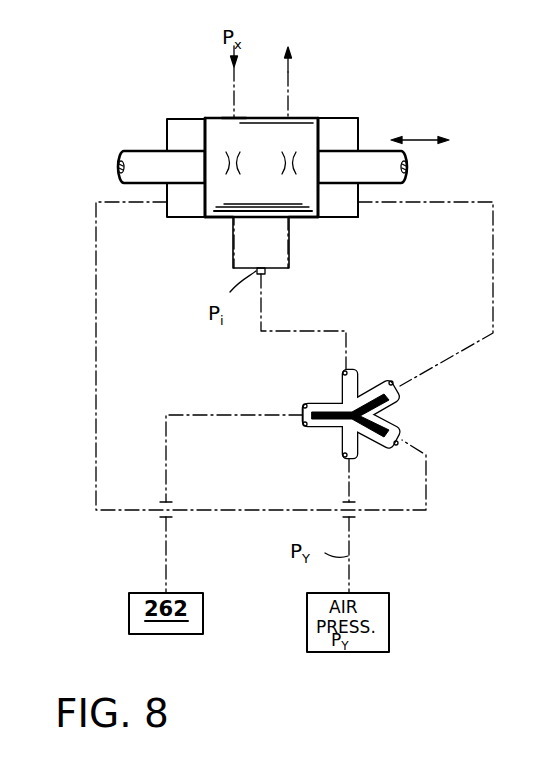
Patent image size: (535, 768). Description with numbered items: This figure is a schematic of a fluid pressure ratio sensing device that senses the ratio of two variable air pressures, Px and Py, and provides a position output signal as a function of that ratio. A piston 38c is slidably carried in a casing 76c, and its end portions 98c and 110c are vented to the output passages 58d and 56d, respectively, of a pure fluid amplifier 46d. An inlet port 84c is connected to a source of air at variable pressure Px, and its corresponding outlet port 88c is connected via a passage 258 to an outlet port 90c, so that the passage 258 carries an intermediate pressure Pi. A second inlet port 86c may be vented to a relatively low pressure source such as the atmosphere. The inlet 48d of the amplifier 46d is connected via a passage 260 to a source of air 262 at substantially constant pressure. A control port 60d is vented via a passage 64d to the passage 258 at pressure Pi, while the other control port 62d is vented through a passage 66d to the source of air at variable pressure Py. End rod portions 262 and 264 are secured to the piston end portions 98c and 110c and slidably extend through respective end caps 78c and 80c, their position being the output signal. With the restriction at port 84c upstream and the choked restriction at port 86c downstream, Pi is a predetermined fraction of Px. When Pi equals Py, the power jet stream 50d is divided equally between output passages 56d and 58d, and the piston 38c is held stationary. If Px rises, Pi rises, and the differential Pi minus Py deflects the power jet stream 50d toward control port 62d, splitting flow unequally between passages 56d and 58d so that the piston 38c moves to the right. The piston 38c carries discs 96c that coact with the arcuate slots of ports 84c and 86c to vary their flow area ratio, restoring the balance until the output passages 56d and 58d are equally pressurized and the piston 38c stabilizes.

The piston 38c is at (261, 167).
The casing 76c is at (349, 118).
The end cap 78c is at (167, 142).
The end cap 80c is at (358, 130).
The inlet port 84c is at (232, 118).
The inlet port 86c is at (281, 118).
The outlet port 88c is at (232, 219).
The outlet port 90c is at (292, 220).
The discs 96c is at (226, 167).
The end portion of piston 98c is at (204, 127).
The end portion of piston 110c is at (330, 129).
The passage 258 is at (261, 245).
The passage 260 is at (216, 414).
The end rod portion 262 is at (186, 177).
The end rod portion 264 is at (383, 177).
The pure fluid amplifier 46d is at (330, 426).
The inlet 48d is at (308, 404).
The power jet stream 50d is at (366, 397).
The output passage 56d is at (392, 386).
The output passage 58d is at (403, 437).
The control port 60d is at (343, 378).
The control port 62d is at (352, 436).
The passage 64d is at (270, 331).
The passage 66d is at (352, 522).